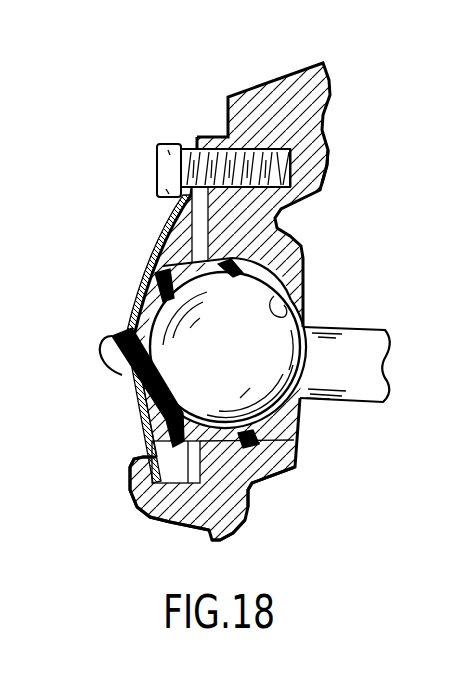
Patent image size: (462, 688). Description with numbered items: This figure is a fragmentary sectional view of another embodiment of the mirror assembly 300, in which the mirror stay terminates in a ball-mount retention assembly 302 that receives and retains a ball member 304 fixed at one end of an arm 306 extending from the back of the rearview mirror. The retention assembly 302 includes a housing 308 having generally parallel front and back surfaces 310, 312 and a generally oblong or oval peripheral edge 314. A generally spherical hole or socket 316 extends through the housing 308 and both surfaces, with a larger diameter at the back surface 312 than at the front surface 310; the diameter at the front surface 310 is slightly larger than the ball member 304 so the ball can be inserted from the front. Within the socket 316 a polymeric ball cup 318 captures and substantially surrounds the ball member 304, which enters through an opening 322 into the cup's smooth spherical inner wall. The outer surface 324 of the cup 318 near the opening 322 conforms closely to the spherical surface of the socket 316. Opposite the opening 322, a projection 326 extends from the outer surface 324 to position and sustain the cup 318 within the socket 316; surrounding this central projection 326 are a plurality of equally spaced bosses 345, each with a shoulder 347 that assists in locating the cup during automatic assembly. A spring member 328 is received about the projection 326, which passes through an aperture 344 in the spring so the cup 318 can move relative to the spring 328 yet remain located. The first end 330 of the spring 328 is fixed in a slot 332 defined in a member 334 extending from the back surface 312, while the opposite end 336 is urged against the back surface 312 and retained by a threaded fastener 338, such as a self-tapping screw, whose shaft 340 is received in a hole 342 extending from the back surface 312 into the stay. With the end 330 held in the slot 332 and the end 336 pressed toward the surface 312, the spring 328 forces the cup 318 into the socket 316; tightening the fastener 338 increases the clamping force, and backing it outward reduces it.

The mirror assembly 300 is at (357, 91).
The ball-mount retention assembly 302 is at (311, 239).
The ball member 304 is at (250, 362).
The arm 306 is at (377, 340).
The housing 308 is at (272, 467).
The front surface 310 is at (300, 445).
The back surface 312 is at (155, 483).
The peripheral edge 314 is at (228, 543).
The socket 316 is at (300, 430).
The ball cup 318 is at (147, 283).
The opening 322 is at (293, 313).
The outer surface 324 is at (162, 245).
The projection 326 is at (110, 362).
The spring member 328 is at (130, 440).
The first end 330 is at (143, 523).
The slot 332 is at (133, 492).
The member 334 is at (133, 493).
The opposite end 336 is at (183, 143).
The threaded fastener 338 is at (168, 141).
The shaft 340 is at (318, 127).
The hole 342 is at (320, 157).
The aperture 344 is at (120, 332).
The bosses 345 is at (138, 426).
The shoulder 347 is at (130, 294).